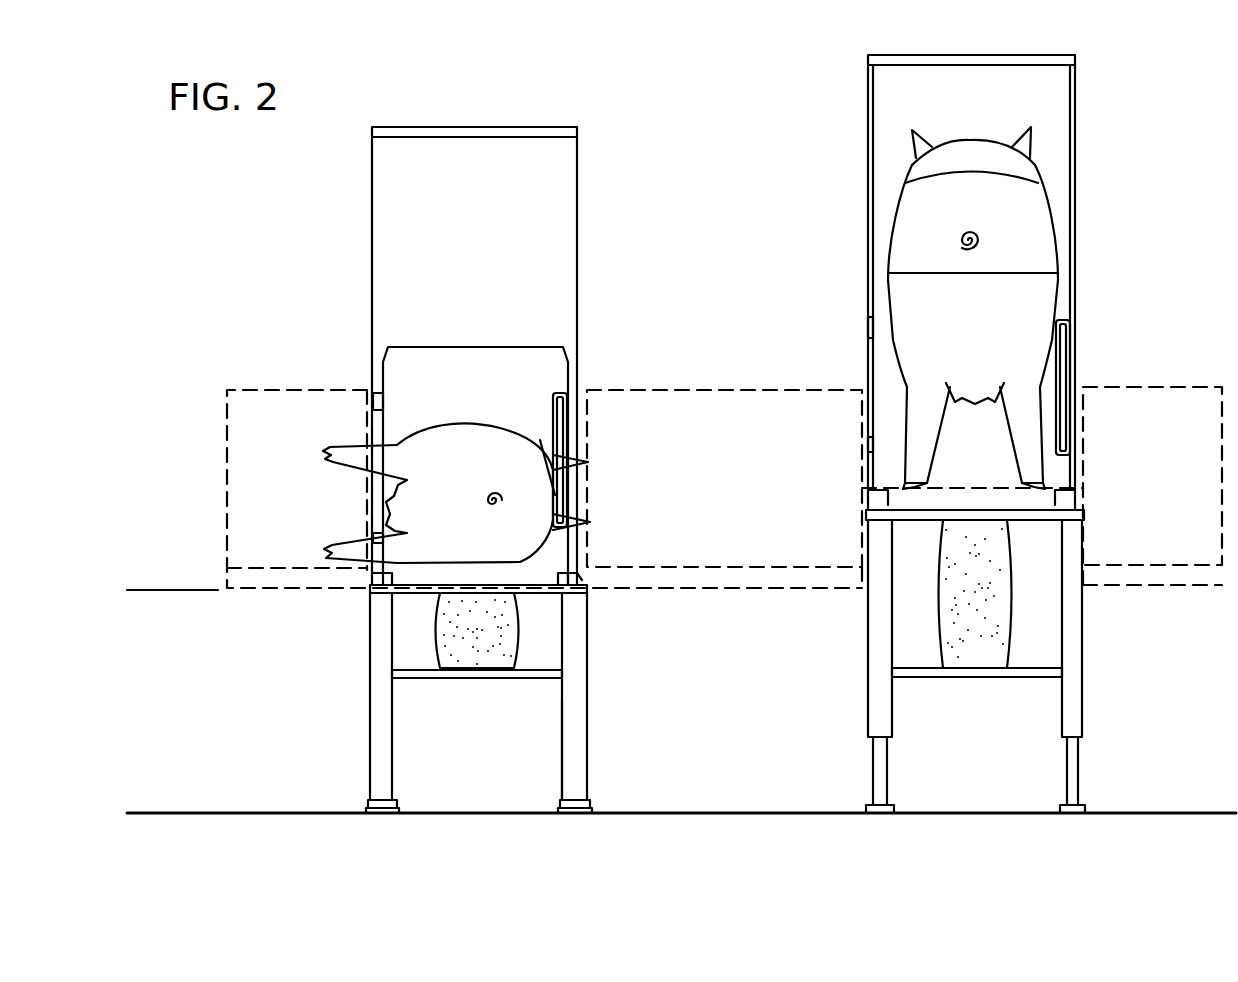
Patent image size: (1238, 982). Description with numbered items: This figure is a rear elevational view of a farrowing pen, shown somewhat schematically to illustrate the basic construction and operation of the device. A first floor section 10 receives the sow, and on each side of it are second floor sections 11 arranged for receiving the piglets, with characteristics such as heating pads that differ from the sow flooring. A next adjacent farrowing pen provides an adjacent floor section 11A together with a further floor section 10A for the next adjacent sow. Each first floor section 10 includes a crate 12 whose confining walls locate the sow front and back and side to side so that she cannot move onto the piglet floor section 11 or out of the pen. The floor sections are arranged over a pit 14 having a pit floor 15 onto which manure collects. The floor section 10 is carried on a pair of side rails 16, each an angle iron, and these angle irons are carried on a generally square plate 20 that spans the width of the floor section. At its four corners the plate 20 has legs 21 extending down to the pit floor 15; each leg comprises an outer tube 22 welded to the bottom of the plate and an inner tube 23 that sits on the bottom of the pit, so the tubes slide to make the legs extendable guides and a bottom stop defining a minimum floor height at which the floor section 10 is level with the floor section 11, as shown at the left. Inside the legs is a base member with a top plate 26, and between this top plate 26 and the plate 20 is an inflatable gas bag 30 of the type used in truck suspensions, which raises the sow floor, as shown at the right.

The first floor section 10 is at (452, 578).
The further floor section 10A is at (990, 446).
The second floor sections 11 is at (283, 565).
The adjacent floor section 11A is at (797, 565).
The crate 12 is at (372, 222).
The pit 14 is at (204, 740).
The pit floor 15 is at (300, 812).
The side rails 16 is at (588, 572).
The plate 20 is at (415, 598).
The legs 21 is at (588, 706).
The outer tube 22 is at (576, 746).
The inner tube 23 is at (592, 806).
The top plate 26 is at (539, 676).
The inflatable gas bag 30 is at (437, 633).